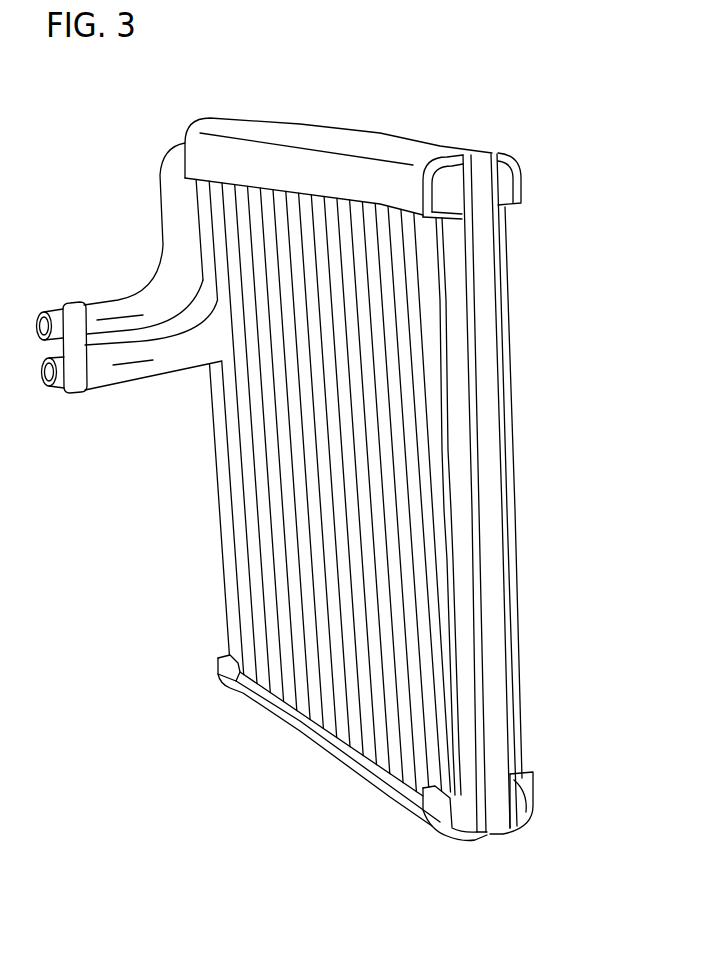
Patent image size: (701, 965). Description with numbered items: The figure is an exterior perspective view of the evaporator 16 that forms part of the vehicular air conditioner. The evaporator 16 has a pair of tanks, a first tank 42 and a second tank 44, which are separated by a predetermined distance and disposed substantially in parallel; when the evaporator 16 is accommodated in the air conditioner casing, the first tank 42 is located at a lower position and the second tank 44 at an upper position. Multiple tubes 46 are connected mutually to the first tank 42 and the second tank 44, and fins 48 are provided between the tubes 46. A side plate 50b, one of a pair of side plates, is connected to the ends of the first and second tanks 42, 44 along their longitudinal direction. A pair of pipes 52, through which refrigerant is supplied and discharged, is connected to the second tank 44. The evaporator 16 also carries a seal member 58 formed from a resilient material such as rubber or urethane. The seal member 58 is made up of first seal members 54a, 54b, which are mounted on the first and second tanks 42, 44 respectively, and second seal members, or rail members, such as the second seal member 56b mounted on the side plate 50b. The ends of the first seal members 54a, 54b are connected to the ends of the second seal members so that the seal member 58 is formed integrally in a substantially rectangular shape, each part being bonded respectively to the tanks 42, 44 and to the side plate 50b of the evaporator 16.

The evaporator 16 is at (208, 704).
The first tank 42 is at (518, 798).
The second tank 44 is at (505, 195).
The tubes 46 is at (268, 522).
The fins 48 is at (415, 578).
The side plate 50b is at (495, 503).
The pipes 52 is at (192, 335).
The first seal member 54a is at (354, 767).
The first seal member 54b is at (323, 163).
The second seal member 56b is at (500, 680).
The seal member 58 is at (492, 399).